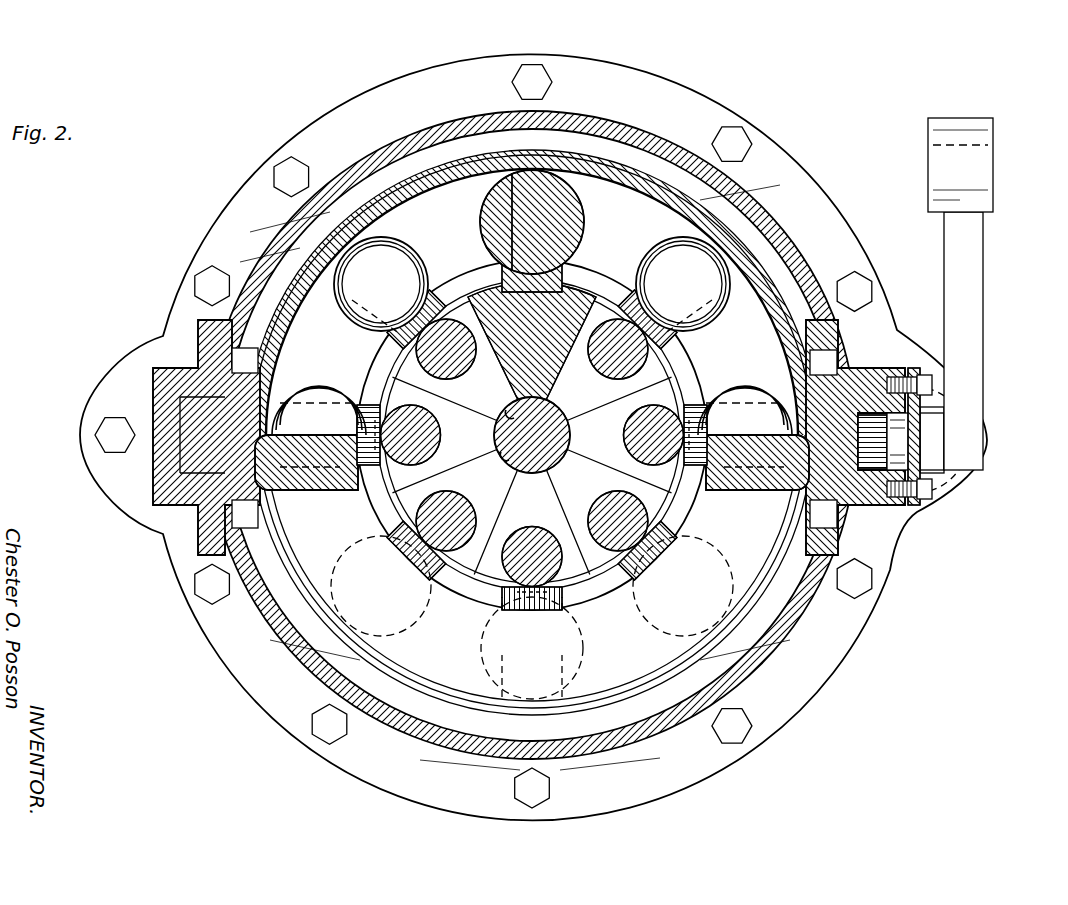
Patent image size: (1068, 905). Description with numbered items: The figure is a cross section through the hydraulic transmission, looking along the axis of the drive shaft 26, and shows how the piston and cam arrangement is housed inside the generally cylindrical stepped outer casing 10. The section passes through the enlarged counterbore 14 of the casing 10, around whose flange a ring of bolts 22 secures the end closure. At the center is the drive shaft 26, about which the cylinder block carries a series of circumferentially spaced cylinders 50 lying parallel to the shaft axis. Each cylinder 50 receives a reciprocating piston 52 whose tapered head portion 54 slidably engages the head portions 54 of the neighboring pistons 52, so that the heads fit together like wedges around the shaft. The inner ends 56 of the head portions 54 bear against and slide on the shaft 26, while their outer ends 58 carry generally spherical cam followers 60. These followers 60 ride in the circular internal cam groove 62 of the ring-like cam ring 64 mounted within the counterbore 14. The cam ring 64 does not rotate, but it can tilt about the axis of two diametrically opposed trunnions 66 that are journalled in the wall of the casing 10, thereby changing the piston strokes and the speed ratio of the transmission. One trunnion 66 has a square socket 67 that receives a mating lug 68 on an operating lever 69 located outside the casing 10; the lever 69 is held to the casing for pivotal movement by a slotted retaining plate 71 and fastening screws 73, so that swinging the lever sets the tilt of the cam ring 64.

The outer casing 10 is at (800, 648).
The enlarged counterbore 14 is at (657, 152).
The bolts 22 is at (530, 78).
The drive shaft 26 is at (560, 436).
The cylinders 50 is at (418, 350).
The piston 52 is at (632, 355).
The head portions 54 is at (550, 190).
The inner ends 56 is at (510, 413).
The outer ends 58 is at (566, 246).
The cam followers 60 is at (584, 227).
The cam groove 62 is at (754, 293).
The cam ring 64 is at (287, 270).
The trunnions 66 is at (165, 372).
The square socket 67 is at (870, 458).
The lug 68 is at (868, 430).
The operating lever 69 is at (984, 293).
The slotted retaining plate 71 is at (920, 500).
The fastening screws 73 is at (933, 478).